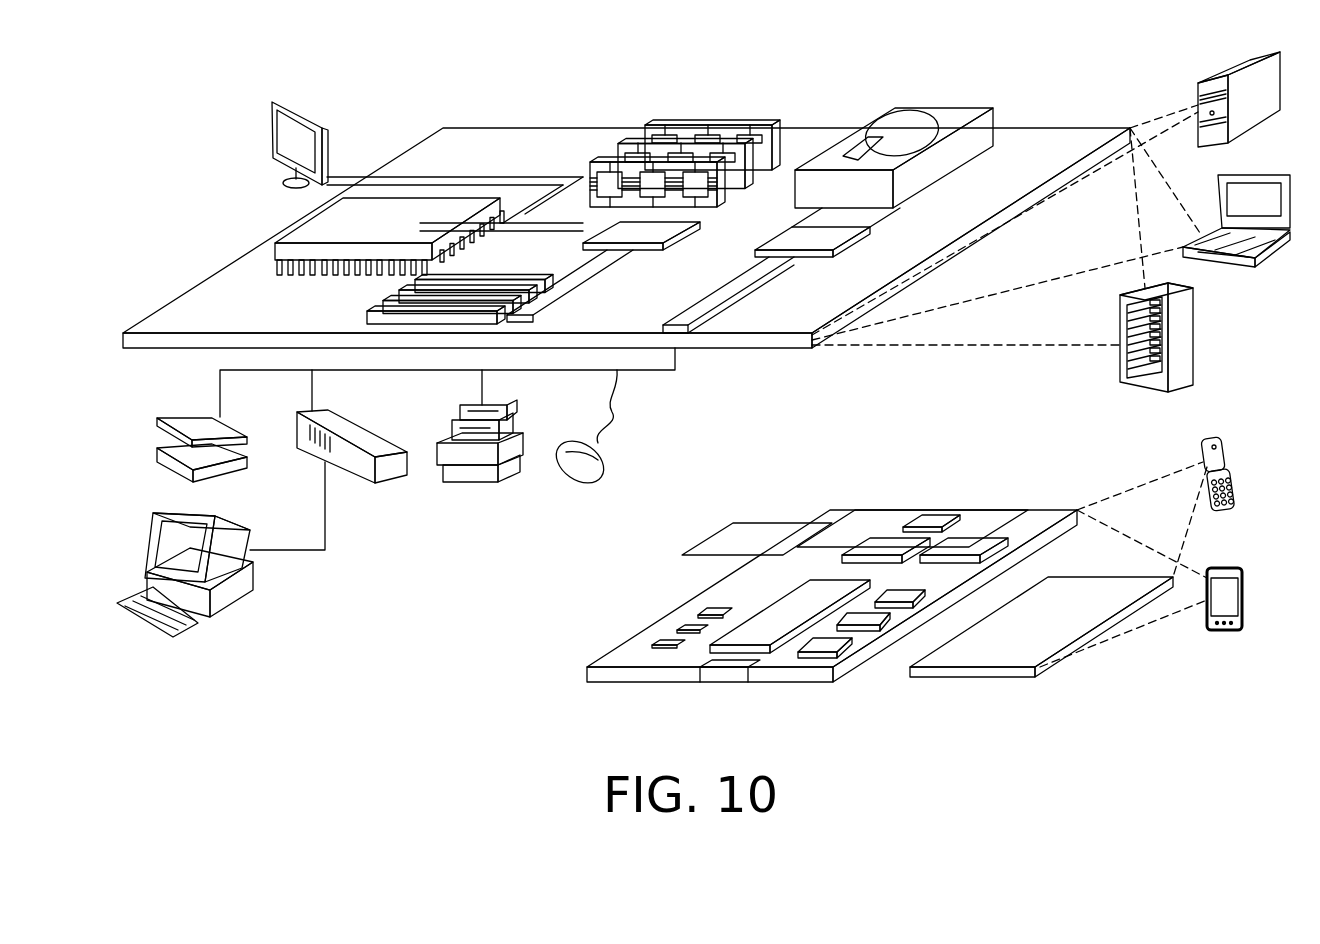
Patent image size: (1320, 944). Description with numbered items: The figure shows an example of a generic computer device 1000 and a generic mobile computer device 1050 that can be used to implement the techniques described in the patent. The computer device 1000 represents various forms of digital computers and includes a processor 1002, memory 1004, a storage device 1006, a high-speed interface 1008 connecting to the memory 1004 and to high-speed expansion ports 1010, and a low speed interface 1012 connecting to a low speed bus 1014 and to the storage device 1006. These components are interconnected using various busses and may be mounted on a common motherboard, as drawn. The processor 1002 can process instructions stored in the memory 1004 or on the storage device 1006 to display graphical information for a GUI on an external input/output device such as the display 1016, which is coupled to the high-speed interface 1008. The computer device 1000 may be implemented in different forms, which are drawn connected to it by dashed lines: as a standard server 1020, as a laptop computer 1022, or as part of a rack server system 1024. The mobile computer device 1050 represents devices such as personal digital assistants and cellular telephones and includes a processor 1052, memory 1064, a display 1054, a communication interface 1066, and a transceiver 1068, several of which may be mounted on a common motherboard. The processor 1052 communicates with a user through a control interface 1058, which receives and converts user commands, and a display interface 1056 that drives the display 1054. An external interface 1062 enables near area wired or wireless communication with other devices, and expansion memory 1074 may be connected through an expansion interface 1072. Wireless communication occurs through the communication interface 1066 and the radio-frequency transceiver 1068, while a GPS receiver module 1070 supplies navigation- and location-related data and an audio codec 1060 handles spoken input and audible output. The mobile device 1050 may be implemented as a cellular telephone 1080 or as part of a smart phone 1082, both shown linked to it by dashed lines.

The generic computer device 1000 is at (395, 80).
The processor 1002 is at (296, 228).
The memory 1004 is at (716, 122).
The storage device 1006 is at (936, 106).
The high-speed interface 1008 is at (653, 230).
The high-speed expansion ports 1010 is at (386, 300).
The low speed interface 1012 is at (788, 236).
The low speed bus 1014 is at (681, 322).
The display 1016 is at (276, 100).
The standard server 1020 is at (1218, 78).
The laptop computer 1022 is at (1268, 172).
The rack server system 1024 is at (1193, 337).
The generic mobile computer device 1050 is at (544, 692).
The processor 1052 is at (760, 622).
The display 1054 is at (1077, 590).
The display interface 1056 is at (840, 643).
The control interface 1058 is at (870, 620).
The audio codec 1060 is at (902, 595).
The external interface 1062 is at (723, 669).
The memory 1064 is at (681, 627).
The communication interface 1066 is at (886, 540).
The transceiver 1068 is at (972, 542).
The GPS receiver module 1070 is at (934, 517).
The expansion interface 1072 is at (816, 516).
The expansion memory 1074 is at (735, 513).
The cellular telephone 1080 is at (1214, 440).
The smart phone 1082 is at (1216, 568).